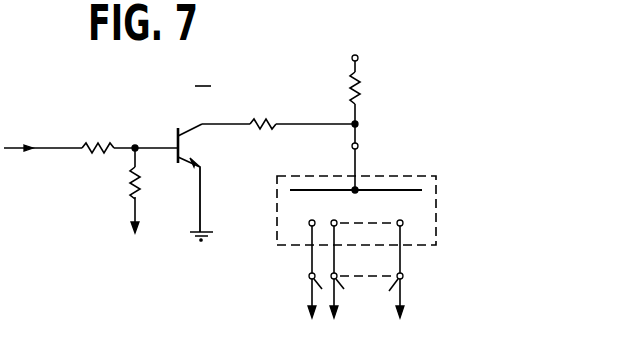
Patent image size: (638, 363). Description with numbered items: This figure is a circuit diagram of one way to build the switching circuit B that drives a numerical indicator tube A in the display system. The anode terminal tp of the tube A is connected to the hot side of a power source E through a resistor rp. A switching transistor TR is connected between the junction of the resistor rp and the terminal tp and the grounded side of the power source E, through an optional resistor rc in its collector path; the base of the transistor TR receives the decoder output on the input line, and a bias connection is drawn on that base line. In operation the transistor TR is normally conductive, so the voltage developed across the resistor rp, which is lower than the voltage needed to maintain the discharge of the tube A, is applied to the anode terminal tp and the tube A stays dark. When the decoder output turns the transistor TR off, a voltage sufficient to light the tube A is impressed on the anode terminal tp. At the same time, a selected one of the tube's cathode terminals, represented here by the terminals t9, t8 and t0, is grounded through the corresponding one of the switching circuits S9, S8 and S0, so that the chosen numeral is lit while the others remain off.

The switching transistor TR is at (178, 134).
The switching circuit B is at (203, 76).
The resistor rc is at (255, 121).
The resistor rp is at (357, 92).
The power source E is at (358, 57).
The anode terminal tp is at (359, 146).
The numerical indicator tube A is at (466, 215).
The bias terminal bias is at (131, 204).
The terminal t9 is at (319, 262).
The terminal t8 is at (341, 262).
The terminal t0 is at (391, 262).
The switching circuit S9 is at (311, 314).
The switching circuit S8 is at (334, 314).
The switching circuit S0 is at (401, 314).